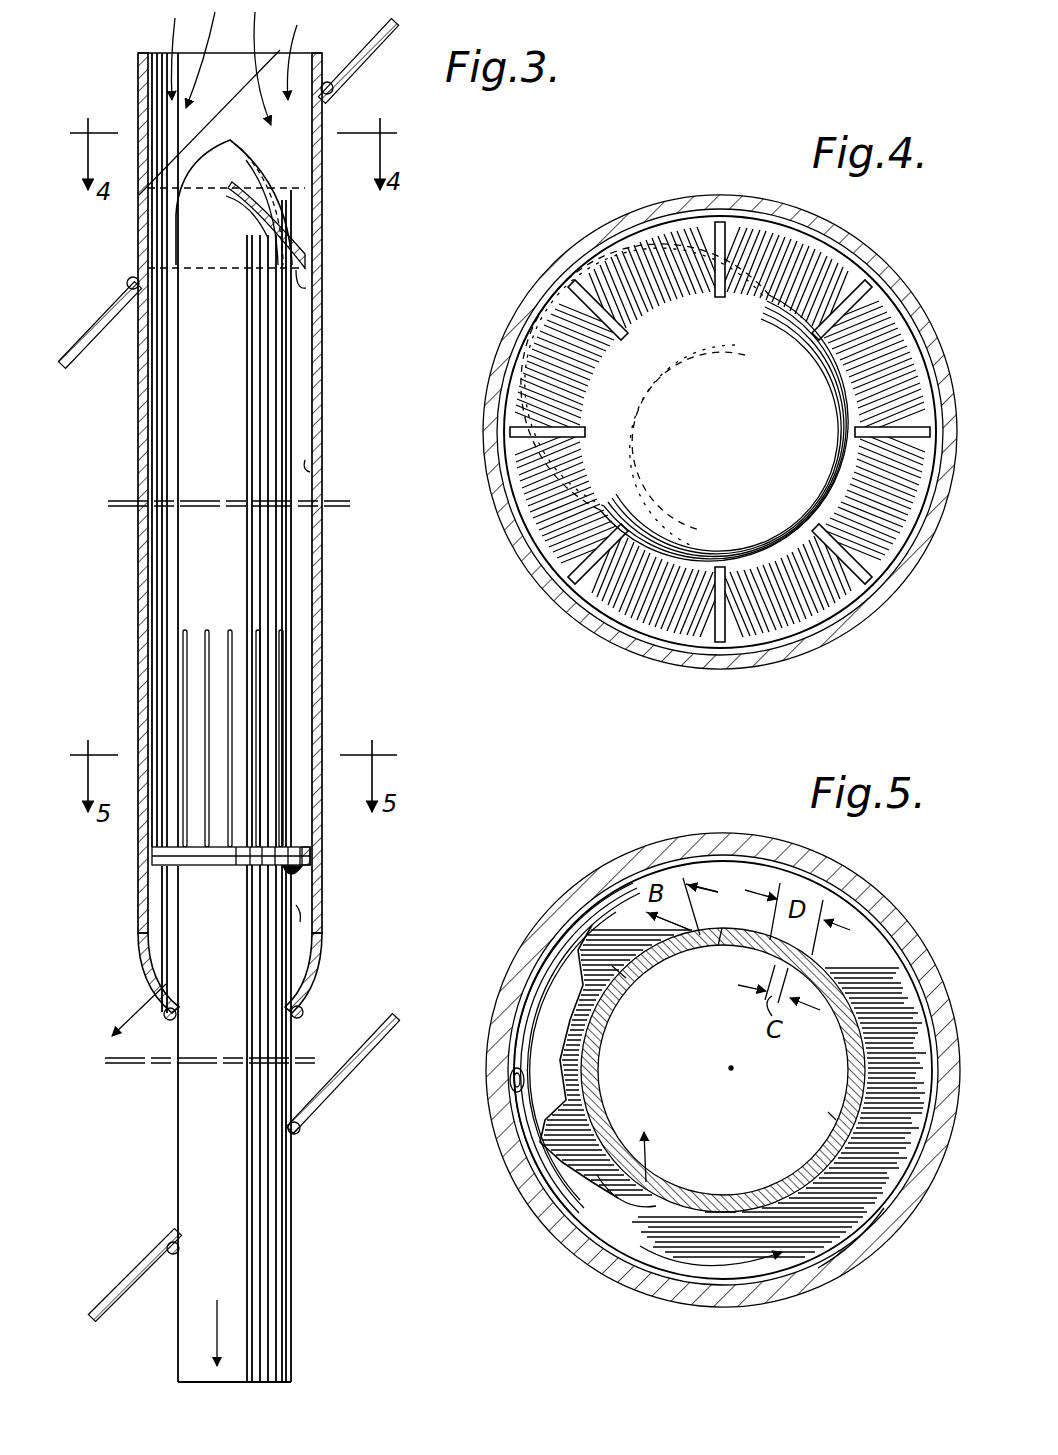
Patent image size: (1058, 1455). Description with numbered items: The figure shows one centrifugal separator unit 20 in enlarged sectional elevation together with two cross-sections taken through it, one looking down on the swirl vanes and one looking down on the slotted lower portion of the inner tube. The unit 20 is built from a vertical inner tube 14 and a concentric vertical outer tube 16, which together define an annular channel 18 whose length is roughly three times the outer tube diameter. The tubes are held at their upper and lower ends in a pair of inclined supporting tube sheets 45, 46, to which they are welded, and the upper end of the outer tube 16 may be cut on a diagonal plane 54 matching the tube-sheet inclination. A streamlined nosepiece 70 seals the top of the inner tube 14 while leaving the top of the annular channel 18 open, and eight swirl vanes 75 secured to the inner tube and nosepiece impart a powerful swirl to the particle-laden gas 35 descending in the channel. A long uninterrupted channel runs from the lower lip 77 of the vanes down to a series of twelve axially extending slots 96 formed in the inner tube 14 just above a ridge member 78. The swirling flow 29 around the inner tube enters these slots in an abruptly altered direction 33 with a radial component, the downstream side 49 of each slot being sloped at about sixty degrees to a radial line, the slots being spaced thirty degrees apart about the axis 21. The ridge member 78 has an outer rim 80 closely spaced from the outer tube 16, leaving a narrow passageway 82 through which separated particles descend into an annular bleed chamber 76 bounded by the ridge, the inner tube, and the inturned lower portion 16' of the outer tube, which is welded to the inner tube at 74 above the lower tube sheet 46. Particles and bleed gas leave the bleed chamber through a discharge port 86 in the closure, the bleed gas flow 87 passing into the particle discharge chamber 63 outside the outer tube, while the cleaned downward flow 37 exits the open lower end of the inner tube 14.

In FIG. 3, the inner tube 14 is at (172, 440).
In FIG. 5, the inner tube 14 is at (596, 1120).
In FIG. 3, the outer tube 16 is at (202, 493).
In FIG. 4, the outer tube 16 is at (720, 432).
In FIG. 5, the outer tube 16 is at (723, 1084).
In FIG. 3, the inturned lower portion of the outer tube 16' is at (272, 973).
In FIG. 5, the inturned lower portion of the outer tube 16' is at (542, 1050).
In FIG. 3, the annular channel 18 is at (312, 472).
In FIG. 5, the annular channel 18 is at (884, 950).
In FIG. 3, the centrifugal separator unit 20 is at (312, 394).
In FIG. 4, the centrifugal separator unit 20 is at (656, 186).
In FIG. 5, the centrifugal separator unit 20 is at (648, 842).
In FIG. 5, the axis 21 is at (733, 1070).
In FIG. 5, the swirling flow 29 is at (696, 1282).
In FIG. 5, the inturning gas flow 33 is at (647, 1138).
In FIG. 3, the particle-laden gas 35 is at (175, 40).
In FIG. 3, the downward flow 37 is at (217, 1340).
In FIG. 3, the upper tube sheet 45 is at (88, 344).
In FIG. 3, the lower tube sheet 46 is at (135, 1270).
In FIG. 5, the downstream side of slot 49 is at (720, 946).
In FIG. 3, the diagonal plane 54 is at (176, 130).
In FIG. 3, the third particle discharge chamber 63 is at (132, 1120).
In FIG. 3, the streamlined nosepiece 70 is at (262, 170).
In FIG. 4, the streamlined nosepiece 70 is at (728, 386).
In FIG. 3, the weld 74 is at (305, 1014).
In FIG. 3, the swirl vanes 75 is at (304, 262).
In FIG. 4, the swirl vanes 75 is at (856, 292).
In FIG. 3, the annular bleed chamber 76 is at (296, 916).
In FIG. 3, the lower lip of the swirl vanes 77 is at (308, 291).
In FIG. 4, the lower lip of the swirl vanes 77 is at (928, 346).
In FIG. 3, the ridge member 78 is at (296, 871).
In FIG. 5, the ridge member 78 is at (904, 992).
In FIG. 3, the outer rim 80 is at (153, 857).
In FIG. 3, the narrow passageway 82 is at (306, 834).
In FIG. 5, the narrow passageway 82 is at (954, 1010).
In FIG. 3, the discharge port 86 is at (160, 984).
In FIG. 5, the discharge port 86 is at (513, 1088).
In FIG. 3, the bleed gas flow 87 is at (130, 1010).
In FIG. 3, the slots 96 is at (281, 634).
In FIG. 5, the slots 96 is at (626, 980).